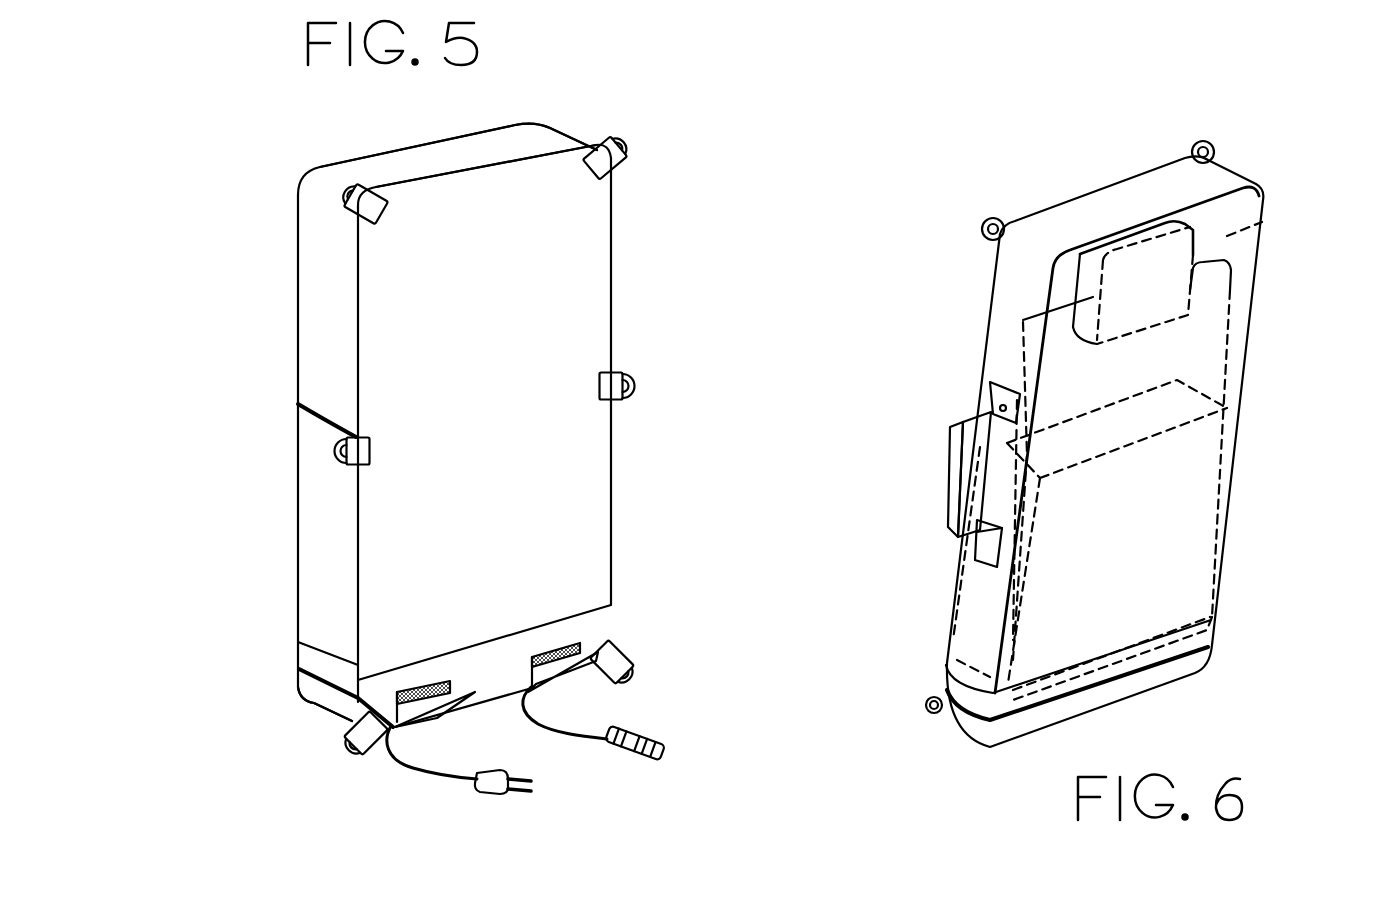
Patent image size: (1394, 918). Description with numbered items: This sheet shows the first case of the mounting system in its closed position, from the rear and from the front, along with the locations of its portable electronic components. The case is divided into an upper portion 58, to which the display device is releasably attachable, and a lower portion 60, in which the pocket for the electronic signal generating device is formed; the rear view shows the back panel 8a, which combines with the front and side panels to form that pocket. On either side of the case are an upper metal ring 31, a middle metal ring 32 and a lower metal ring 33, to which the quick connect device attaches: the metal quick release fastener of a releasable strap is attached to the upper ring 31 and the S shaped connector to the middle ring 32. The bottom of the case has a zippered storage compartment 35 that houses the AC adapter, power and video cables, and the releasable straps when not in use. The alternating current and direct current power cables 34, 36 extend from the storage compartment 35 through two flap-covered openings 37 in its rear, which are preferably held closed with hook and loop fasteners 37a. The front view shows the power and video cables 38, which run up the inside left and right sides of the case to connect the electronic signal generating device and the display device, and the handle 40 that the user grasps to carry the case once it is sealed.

In FIG. 5, the back panel 8a is at (447, 422).
In FIG. 5, the upper metal ring 31 is at (357, 194).
In FIG. 5, the middle metal ring 32 is at (334, 449).
In FIG. 5, the lower metal ring 33 is at (357, 752).
In FIG. 5, the alternating current power cable 34 is at (474, 782).
In FIG. 5, the zippered storage compartment 35 is at (323, 697).
In FIG. 6, the zippered storage compartment 35 is at (980, 740).
In FIG. 5, the direct current power cable 36 is at (667, 751).
In FIG. 5, the flap-covered opening 37 is at (440, 719).
In FIG. 5, the hook and loop fastener 37a is at (570, 643).
In FIG. 6, the power and video cables 38 is at (1225, 333).
In FIG. 6, the handle 40 is at (957, 477).
In FIG. 5, the upper portion 58 is at (475, 203).
In FIG. 6, the upper portion 58 is at (1223, 237).
In FIG. 5, the lower portion 60 is at (443, 477).
In FIG. 6, the lower portion 60 is at (1155, 560).